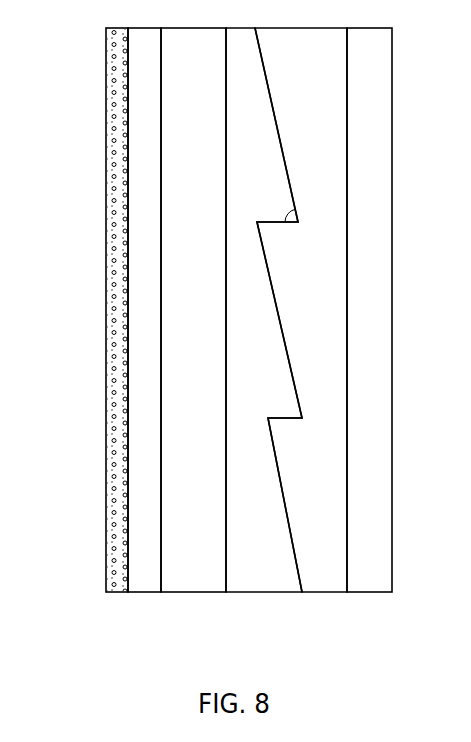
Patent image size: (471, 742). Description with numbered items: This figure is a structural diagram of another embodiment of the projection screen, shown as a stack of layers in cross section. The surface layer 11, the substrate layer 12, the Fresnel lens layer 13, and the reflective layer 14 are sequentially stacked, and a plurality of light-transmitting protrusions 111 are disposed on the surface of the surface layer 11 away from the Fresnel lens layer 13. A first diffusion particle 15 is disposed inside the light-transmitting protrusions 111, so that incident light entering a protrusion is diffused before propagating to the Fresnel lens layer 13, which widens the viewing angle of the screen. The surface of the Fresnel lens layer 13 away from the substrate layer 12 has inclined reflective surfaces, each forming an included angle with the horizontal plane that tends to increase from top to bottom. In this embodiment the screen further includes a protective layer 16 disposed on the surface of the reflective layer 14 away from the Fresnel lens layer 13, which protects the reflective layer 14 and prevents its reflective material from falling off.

The surface layer 11 is at (143, 577).
The substrate layer 12 is at (199, 560).
The Fresnel lens layer 13 is at (262, 573).
The reflective layer 14 is at (320, 565).
The first diffusion particle 15 is at (103, 358).
The protective layer 16 is at (367, 572).
The light-transmitting protrusions 111 is at (103, 257).